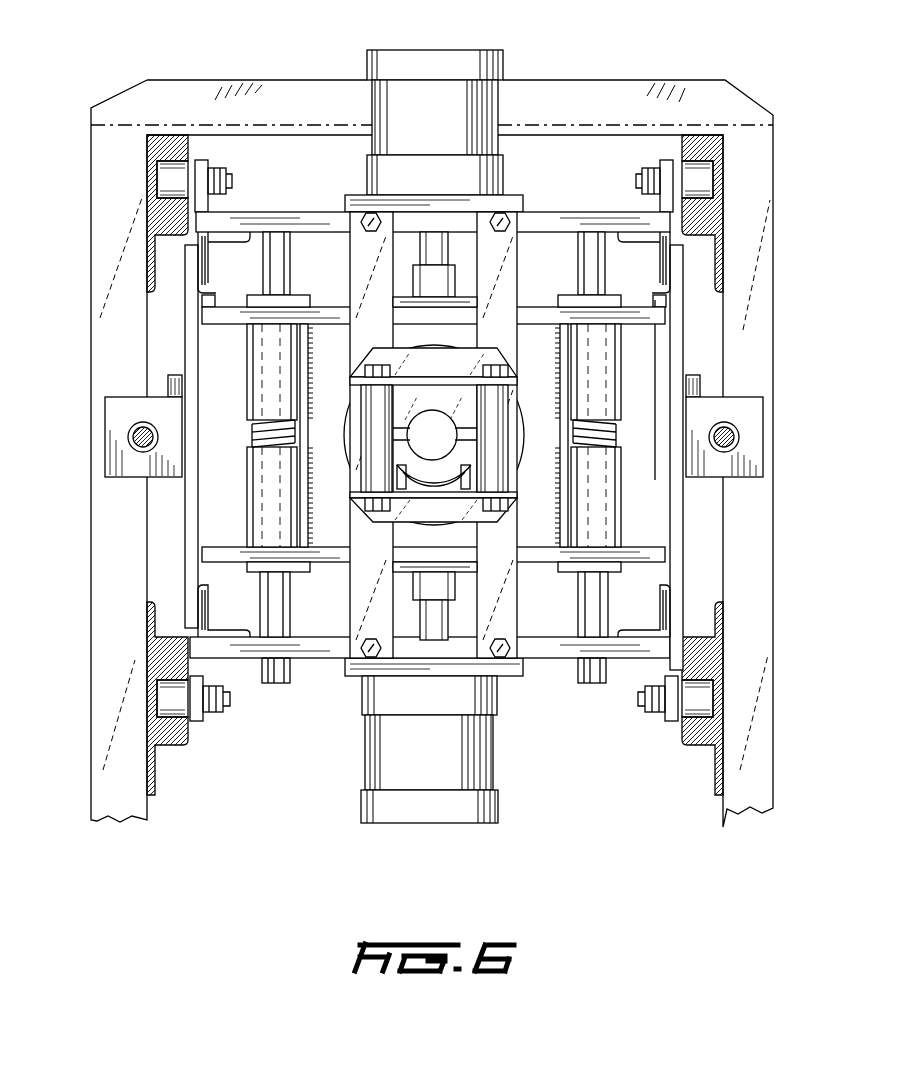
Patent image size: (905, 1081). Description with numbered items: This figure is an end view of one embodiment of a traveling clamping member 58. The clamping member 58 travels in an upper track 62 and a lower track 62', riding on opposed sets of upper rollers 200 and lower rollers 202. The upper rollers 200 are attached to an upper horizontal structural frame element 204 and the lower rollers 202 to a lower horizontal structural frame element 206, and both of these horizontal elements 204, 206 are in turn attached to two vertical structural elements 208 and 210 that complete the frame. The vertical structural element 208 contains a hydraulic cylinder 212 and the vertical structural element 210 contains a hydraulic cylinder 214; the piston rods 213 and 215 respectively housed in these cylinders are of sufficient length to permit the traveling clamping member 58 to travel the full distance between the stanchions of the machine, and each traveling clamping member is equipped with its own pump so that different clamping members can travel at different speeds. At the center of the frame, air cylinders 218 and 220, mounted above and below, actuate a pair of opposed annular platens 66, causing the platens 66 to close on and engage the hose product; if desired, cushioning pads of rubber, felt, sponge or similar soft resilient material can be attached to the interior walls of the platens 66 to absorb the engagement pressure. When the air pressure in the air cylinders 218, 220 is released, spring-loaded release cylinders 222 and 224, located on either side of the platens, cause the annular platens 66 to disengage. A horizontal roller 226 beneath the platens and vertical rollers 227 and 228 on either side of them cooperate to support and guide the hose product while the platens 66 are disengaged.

The traveling clamping member 58 is at (192, 78).
The upper track 62 is at (702, 190).
The lower track 62' is at (693, 698).
The annular platens 66 is at (425, 410).
The upper rollers 200 is at (170, 175).
The lower rollers 202 is at (187, 716).
The horizontal structural frame element 204 is at (312, 218).
The horizontal structural frame element 206 is at (335, 656).
The vertical structural element 208 is at (190, 334).
The vertical structural element 210 is at (680, 345).
The hydraulic cylinder 212 is at (118, 412).
The piston rod 213 is at (130, 441).
The hydraulic cylinder 214 is at (752, 412).
The piston rod 215 is at (738, 441).
The air cylinder 218 is at (451, 55).
The air cylinder 220 is at (451, 812).
The spring-loaded release cylinder 222 is at (245, 400).
The spring-loaded release cylinder 224 is at (622, 400).
The horizontal roller 226 is at (433, 486).
The vertical roller 227 is at (370, 436).
The vertical roller 228 is at (500, 436).